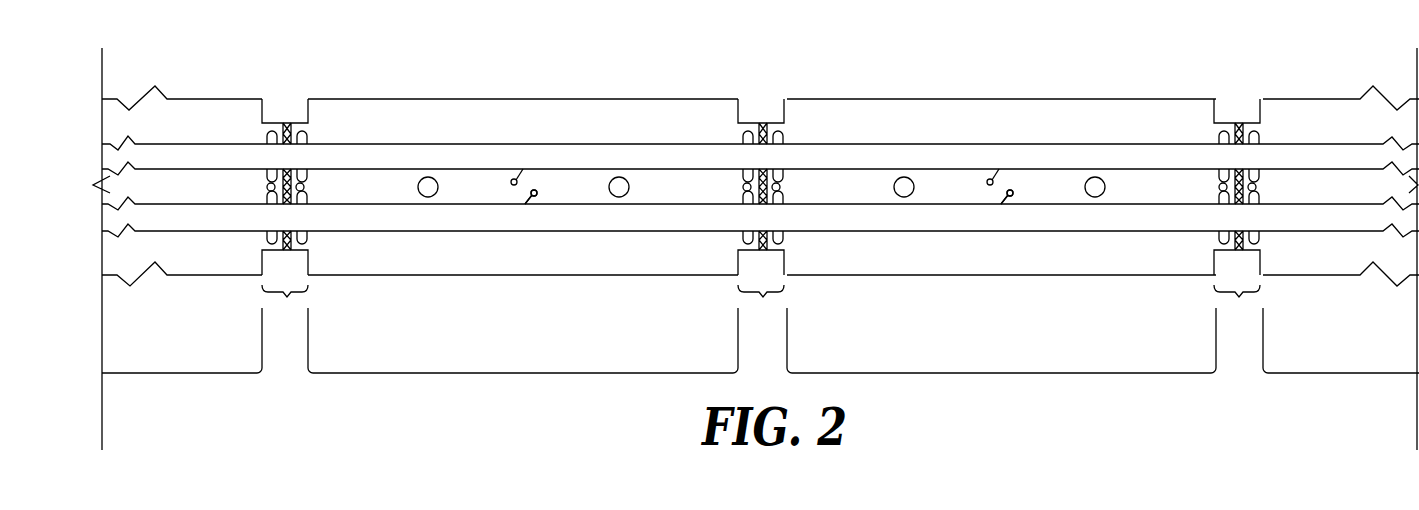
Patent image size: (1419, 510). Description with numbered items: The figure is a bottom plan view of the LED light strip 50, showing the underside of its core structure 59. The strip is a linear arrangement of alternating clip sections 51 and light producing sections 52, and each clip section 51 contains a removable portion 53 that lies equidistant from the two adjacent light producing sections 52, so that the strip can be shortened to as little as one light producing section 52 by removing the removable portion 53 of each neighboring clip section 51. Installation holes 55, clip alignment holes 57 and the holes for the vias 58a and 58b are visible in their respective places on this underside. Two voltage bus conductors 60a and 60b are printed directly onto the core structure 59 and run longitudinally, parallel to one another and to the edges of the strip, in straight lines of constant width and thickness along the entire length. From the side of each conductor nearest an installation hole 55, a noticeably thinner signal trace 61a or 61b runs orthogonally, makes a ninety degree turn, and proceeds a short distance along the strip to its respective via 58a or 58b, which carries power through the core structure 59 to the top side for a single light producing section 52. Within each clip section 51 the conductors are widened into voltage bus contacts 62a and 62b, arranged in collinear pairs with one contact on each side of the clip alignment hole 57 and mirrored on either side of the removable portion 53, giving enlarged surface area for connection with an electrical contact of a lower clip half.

The LED light strip 50 is at (215, 442).
The clip section 51 is at (760, 230).
The light producing section 52 is at (145, 373).
The removable portion 53 is at (770, 148).
The installation hole 55 is at (761, 115).
The clip alignment hole 57 is at (761, 143).
The via 58a is at (740, 116).
The via 58b is at (796, 262).
The core structure 59 is at (179, 115).
The voltage bus conductor 60a is at (760, 88).
The voltage bus conductor 60b is at (760, 119).
The signal trace 61a is at (783, 125).
The signal trace 61b is at (742, 264).
The voltage bus contact 62a is at (762, 102).
The voltage bus contact 62b is at (761, 284).